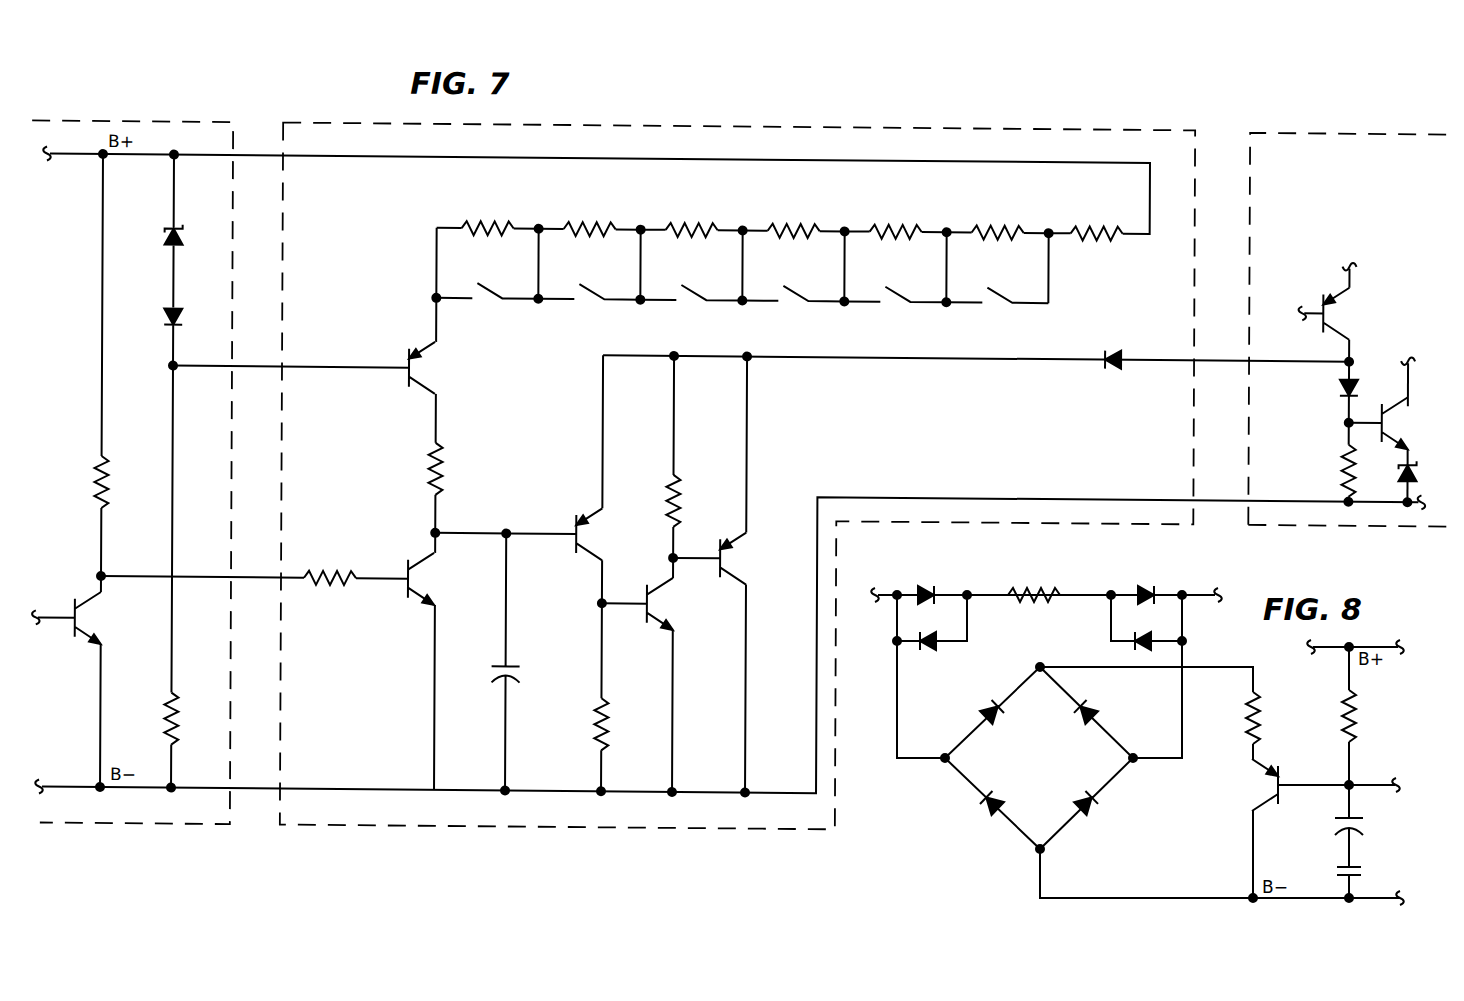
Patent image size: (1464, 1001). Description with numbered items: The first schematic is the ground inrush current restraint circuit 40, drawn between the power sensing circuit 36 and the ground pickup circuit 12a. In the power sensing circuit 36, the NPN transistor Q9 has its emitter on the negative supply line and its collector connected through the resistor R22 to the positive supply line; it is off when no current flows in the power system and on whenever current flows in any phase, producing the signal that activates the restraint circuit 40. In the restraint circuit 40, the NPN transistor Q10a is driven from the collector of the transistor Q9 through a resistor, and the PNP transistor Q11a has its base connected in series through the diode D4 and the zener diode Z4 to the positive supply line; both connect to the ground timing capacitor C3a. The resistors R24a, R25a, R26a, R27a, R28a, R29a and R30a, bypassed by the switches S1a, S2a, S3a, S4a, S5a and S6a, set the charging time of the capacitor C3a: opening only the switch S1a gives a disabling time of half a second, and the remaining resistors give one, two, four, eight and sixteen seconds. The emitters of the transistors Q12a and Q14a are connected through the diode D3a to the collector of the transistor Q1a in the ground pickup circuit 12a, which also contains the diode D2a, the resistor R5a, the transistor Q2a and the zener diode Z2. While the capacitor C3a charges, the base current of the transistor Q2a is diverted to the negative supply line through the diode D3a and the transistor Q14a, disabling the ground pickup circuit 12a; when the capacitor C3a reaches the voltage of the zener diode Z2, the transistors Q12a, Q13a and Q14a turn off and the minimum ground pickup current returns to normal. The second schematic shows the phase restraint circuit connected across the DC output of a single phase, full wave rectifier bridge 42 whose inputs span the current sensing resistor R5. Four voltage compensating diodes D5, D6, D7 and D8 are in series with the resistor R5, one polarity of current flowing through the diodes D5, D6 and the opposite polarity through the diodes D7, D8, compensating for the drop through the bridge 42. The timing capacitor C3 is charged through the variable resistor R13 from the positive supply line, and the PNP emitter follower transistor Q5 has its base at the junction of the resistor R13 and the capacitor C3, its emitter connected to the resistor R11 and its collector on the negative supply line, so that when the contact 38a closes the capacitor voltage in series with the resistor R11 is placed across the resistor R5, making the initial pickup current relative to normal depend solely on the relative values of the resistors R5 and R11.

In FIG. 7, the power sensing circuit 36 is at (168, 119).
In FIG. 7, the ground inrush current restraint circuit 40 is at (1195, 123).
In FIG. 7, the ground pickup circuit 12a is at (1366, 120).
In FIG. 8, the single phase full wave rectifier bridge 42 is at (1039, 758).
In FIG. 8, the normally open contact 38a is at (1367, 876).
In FIG. 7, the zener diode Z4 is at (190, 237).
In FIG. 7, the diode D4 is at (190, 318).
In FIG. 7, the resistor R22 is at (120, 482).
In FIG. 7, the NPN transistor Q9 is at (74, 619).
In FIG. 7, the PNP transistor Q11a is at (324, 367).
In FIG. 7, the NPN transistor Q10a is at (287, 579).
In FIG. 7, the transistor Q12a is at (606, 534).
In FIG. 7, the transistor Q13a is at (655, 605).
In FIG. 7, the transistor Q14a is at (748, 558).
In FIG. 7, the ground timing capacitor C3a is at (523, 662).
In FIG. 7, the diode D3a is at (1116, 374).
In FIG. 7, the transistor Q1a is at (1335, 301).
In FIG. 7, the diode D2a is at (1367, 390).
In FIG. 7, the transistor Q2a is at (1407, 405).
In FIG. 7, the resistor R5a is at (1326, 470).
In FIG. 7, the zener diode Z2 is at (1422, 476).
In FIG. 7, the resistor R24a is at (488, 218).
In FIG. 7, the resistor R25a is at (590, 219).
In FIG. 7, the resistor R26a is at (692, 220).
In FIG. 7, the resistor R27a is at (794, 221).
In FIG. 7, the resistor R28a is at (896, 221).
In FIG. 7, the resistor R29a is at (998, 222).
In FIG. 7, the resistor R30a is at (1097, 223).
In FIG. 7, the switch S1a is at (487, 296).
In FIG. 7, the switch S2a is at (589, 297).
In FIG. 7, the switch S3a is at (691, 298).
In FIG. 7, the switch S4a is at (793, 299).
In FIG. 7, the switch S5a is at (895, 299).
In FIG. 7, the switch S6a is at (997, 300).
In FIG. 8, the voltage compensating diode D5 is at (925, 586).
In FIG. 8, the voltage compensating diode D6 is at (1146, 586).
In FIG. 8, the voltage compensating diode D7 is at (932, 622).
In FIG. 8, the voltage compensating diode D8 is at (1146, 622).
In FIG. 8, the current sensing resistor R5 is at (1034, 585).
In FIG. 8, the resistor R11 is at (1270, 718).
In FIG. 8, the variable resistor R13 is at (1368, 716).
In FIG. 8, the PNP transistor Q5 is at (1317, 785).
In FIG. 8, the timing capacitor C3 is at (1365, 823).